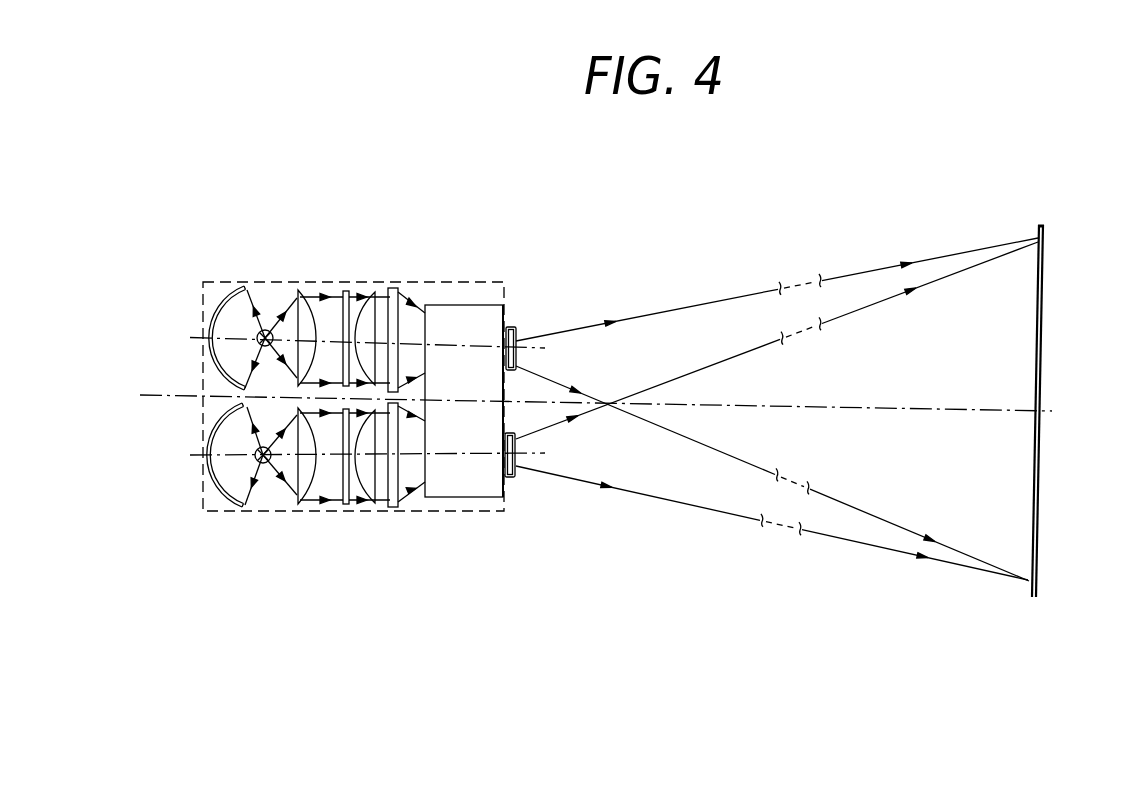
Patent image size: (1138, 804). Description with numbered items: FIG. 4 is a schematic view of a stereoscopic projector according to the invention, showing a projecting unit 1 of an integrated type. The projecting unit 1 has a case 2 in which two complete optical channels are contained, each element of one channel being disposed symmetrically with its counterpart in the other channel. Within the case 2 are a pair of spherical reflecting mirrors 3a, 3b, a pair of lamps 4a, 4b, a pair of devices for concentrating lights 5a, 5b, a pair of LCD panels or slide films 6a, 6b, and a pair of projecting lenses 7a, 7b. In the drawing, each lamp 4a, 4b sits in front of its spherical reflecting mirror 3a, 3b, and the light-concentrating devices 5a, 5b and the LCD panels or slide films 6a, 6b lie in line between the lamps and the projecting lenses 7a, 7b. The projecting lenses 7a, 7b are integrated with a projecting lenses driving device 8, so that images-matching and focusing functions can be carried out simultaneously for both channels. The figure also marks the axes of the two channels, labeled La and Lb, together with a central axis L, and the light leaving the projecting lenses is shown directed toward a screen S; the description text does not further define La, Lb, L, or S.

The projecting unit 1 is at (389, 282).
The case 2 is at (466, 303).
The spherical reflecting mirror 3a is at (227, 300).
The spherical reflecting mirror 3b is at (217, 495).
The lamp 4a is at (265, 328).
The lamp 4b is at (263, 466).
The device for concentrating lights 5a is at (372, 274).
The device for concentrating lights 5b is at (372, 521).
The LCD panel or slide film 6a is at (397, 292).
The LCD panel or slide film 6b is at (393, 510).
The projecting lens 7a is at (513, 322).
The projecting lens 7b is at (510, 478).
The projecting lenses driving device 8 is at (490, 300).
The first optical axis La is at (383, 353).
The second optical axis Lb is at (382, 455).
The central projection axis L is at (606, 412).
The screen S is at (1036, 533).